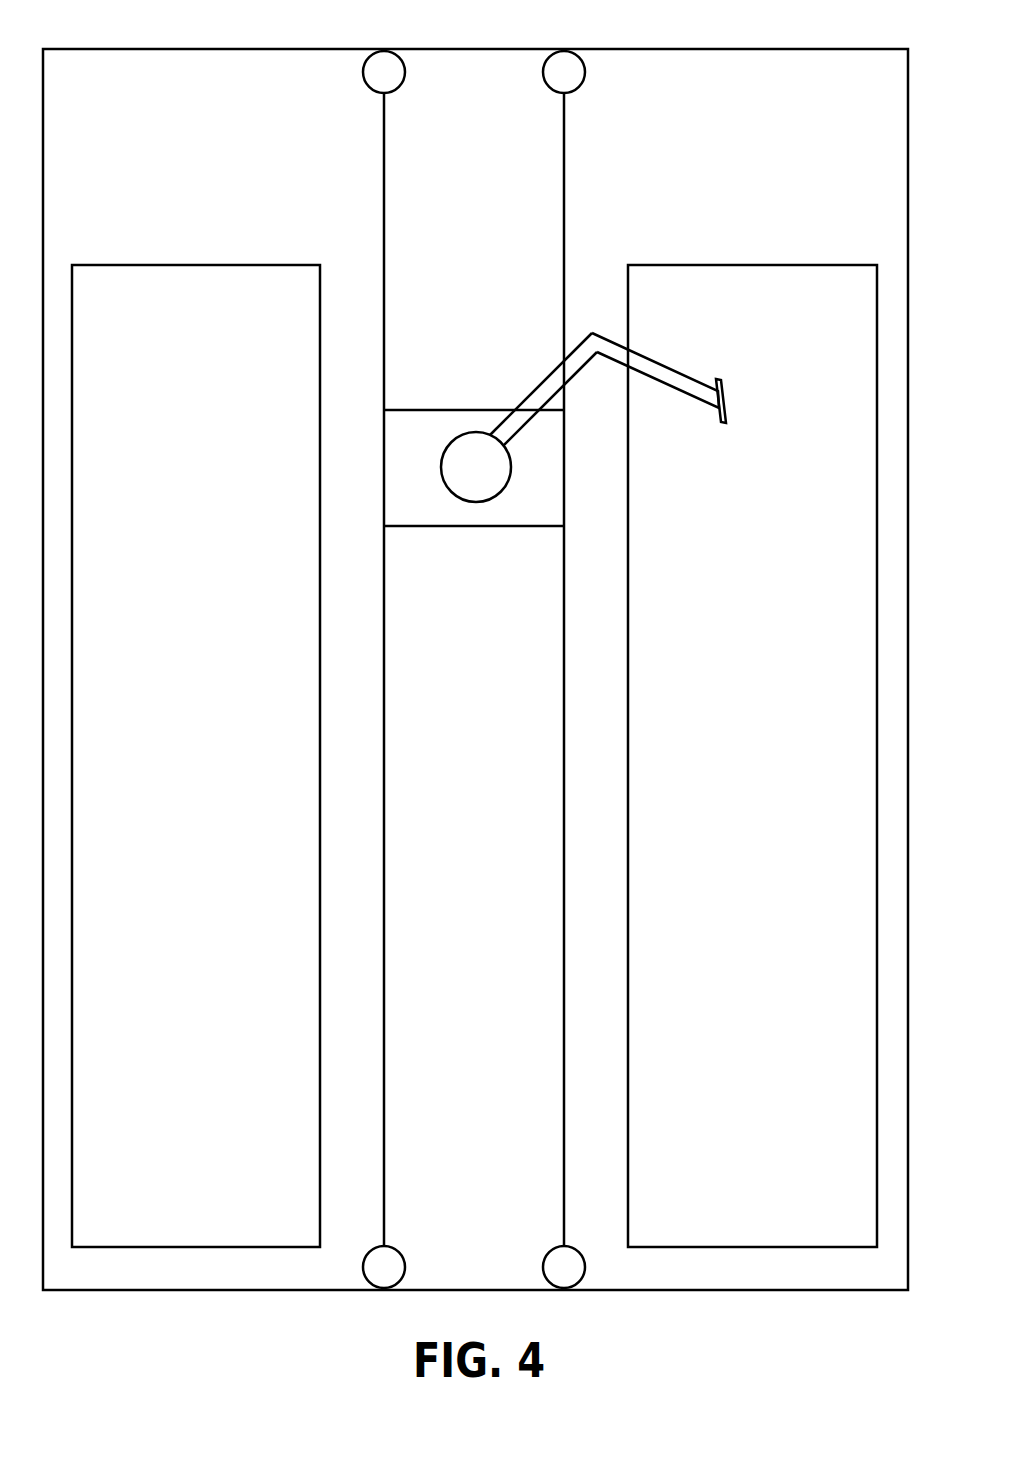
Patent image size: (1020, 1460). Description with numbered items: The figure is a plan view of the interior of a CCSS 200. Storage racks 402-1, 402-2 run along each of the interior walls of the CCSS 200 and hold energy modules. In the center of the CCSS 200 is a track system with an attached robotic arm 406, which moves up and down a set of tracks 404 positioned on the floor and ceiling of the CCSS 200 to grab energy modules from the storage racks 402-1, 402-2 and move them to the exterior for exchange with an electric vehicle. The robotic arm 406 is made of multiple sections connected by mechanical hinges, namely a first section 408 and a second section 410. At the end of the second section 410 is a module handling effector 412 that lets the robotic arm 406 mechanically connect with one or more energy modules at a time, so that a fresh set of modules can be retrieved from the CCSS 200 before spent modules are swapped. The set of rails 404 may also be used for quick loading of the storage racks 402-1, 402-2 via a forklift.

The CCSS 200 is at (200, 49).
The storage rack 402-1 is at (212, 265).
The storage rack 402-2 is at (767, 265).
The set of tracks 404 is at (564, 194).
The robotic arm 406 is at (510, 526).
The first section 408 is at (550, 375).
The second section 410 is at (662, 365).
The module handling effector 412 is at (726, 410).